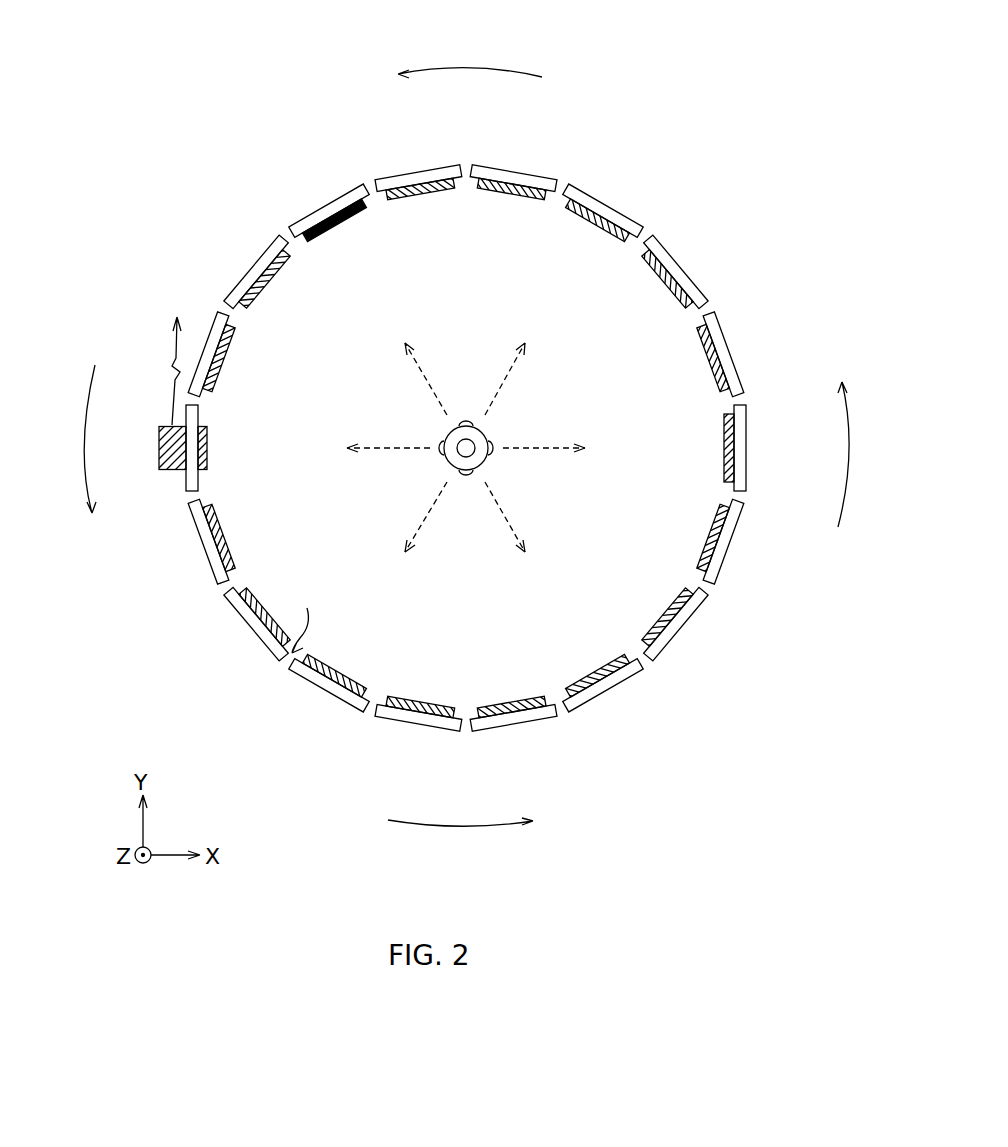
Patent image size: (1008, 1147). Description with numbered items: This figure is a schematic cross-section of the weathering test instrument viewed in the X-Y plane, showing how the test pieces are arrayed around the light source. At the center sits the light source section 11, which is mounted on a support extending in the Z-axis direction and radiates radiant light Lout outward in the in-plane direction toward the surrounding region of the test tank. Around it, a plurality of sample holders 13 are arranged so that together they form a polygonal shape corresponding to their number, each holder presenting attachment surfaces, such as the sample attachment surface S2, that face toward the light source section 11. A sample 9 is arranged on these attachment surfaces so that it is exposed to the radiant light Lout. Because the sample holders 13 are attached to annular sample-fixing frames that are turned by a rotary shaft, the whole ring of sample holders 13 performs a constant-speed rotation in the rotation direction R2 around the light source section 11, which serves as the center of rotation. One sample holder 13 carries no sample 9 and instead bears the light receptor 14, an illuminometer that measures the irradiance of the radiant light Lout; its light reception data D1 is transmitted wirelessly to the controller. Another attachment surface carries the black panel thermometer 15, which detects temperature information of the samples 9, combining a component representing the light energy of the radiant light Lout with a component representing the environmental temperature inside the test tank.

The sample 9 is at (258, 603).
The light source section 11 is at (458, 487).
The sample holder 13 is at (235, 605).
The light receptor 14 is at (172, 475).
The black panel thermometer 15 is at (336, 222).
The rotation direction R2 is at (462, 65).
The light reception data D1 is at (181, 353).
The sample attachment surface S2 is at (311, 617).
The radiant light Lout is at (466, 432).